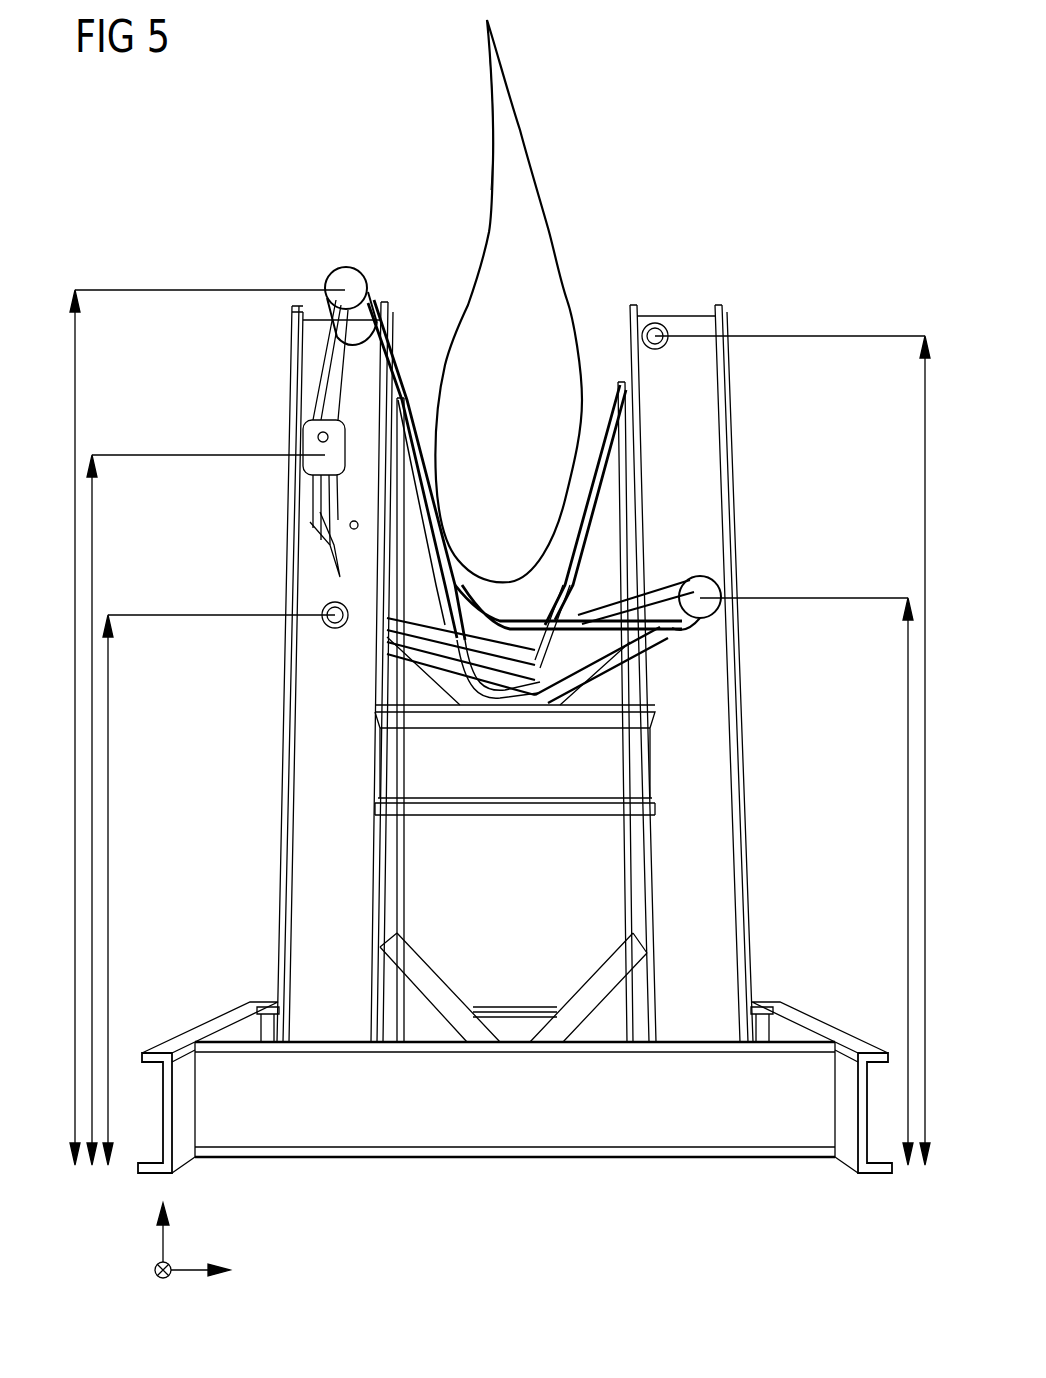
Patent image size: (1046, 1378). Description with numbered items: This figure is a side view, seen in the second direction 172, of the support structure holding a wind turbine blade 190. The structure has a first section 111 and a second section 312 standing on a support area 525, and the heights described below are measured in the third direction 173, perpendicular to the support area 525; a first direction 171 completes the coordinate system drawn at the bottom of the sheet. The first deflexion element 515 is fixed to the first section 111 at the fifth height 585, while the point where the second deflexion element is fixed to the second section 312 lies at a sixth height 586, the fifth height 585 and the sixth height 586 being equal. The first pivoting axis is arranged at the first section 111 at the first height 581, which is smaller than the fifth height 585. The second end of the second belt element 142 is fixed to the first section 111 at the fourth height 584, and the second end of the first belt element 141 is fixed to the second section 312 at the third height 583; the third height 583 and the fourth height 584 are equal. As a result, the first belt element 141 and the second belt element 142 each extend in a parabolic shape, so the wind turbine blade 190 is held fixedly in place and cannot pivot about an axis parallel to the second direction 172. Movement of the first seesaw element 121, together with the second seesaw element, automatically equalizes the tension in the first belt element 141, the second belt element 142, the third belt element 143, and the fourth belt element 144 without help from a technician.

The first section 111 is at (262, 905).
The second section 312 is at (782, 928).
The first seesaw element 121 is at (318, 465).
The first deflexion element 515 is at (346, 280).
The support area 525 is at (835, 1150).
The first belt element 141 is at (499, 622).
The second belt element 142 is at (458, 645).
The third belt element 143 is at (463, 667).
The fourth belt element 144 is at (505, 660).
The wind turbine blade 190 is at (517, 183).
The first height 581 is at (92, 532).
The third height 583 is at (908, 835).
The fourth height 584 is at (108, 845).
The fifth height 585 is at (75, 372).
The sixth height 586 is at (925, 465).
The first direction 171 is at (192, 1275).
The second direction 172 is at (155, 1278).
The third direction 173 is at (166, 1240).